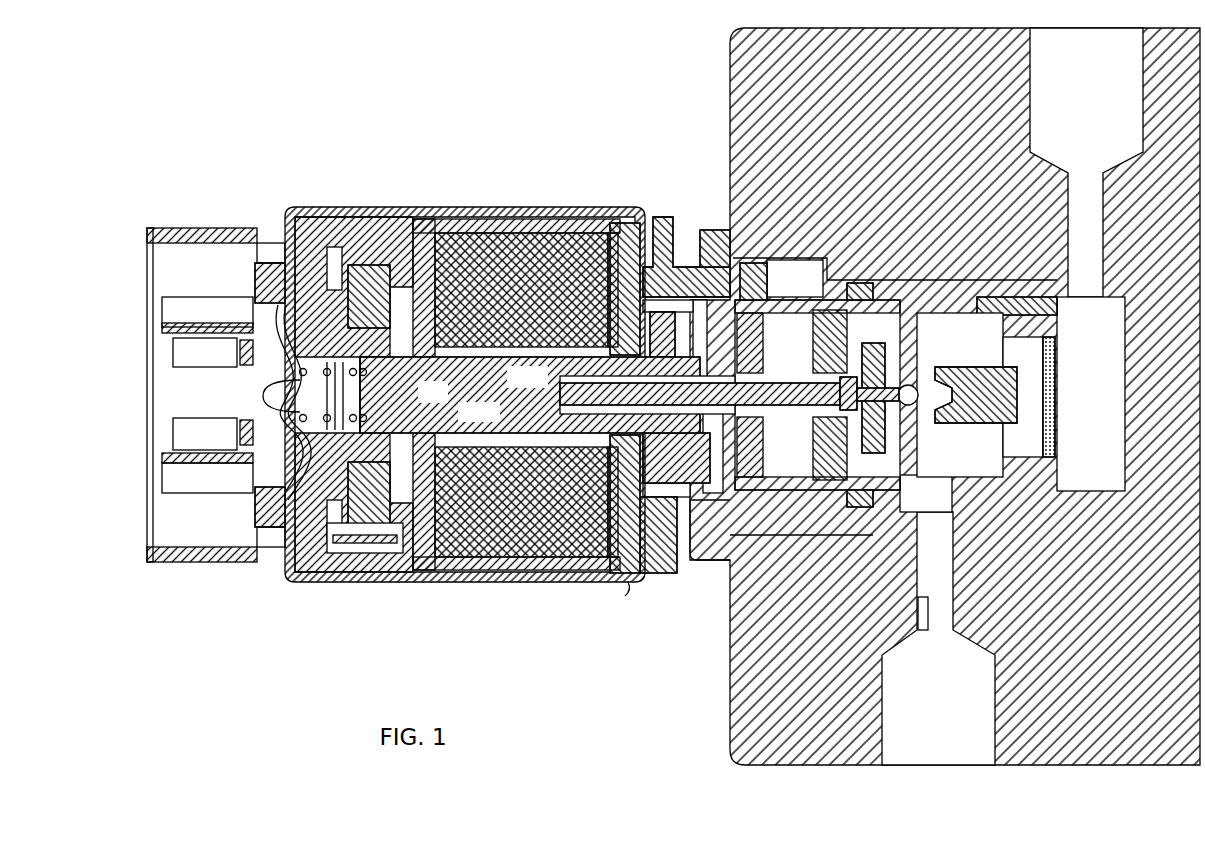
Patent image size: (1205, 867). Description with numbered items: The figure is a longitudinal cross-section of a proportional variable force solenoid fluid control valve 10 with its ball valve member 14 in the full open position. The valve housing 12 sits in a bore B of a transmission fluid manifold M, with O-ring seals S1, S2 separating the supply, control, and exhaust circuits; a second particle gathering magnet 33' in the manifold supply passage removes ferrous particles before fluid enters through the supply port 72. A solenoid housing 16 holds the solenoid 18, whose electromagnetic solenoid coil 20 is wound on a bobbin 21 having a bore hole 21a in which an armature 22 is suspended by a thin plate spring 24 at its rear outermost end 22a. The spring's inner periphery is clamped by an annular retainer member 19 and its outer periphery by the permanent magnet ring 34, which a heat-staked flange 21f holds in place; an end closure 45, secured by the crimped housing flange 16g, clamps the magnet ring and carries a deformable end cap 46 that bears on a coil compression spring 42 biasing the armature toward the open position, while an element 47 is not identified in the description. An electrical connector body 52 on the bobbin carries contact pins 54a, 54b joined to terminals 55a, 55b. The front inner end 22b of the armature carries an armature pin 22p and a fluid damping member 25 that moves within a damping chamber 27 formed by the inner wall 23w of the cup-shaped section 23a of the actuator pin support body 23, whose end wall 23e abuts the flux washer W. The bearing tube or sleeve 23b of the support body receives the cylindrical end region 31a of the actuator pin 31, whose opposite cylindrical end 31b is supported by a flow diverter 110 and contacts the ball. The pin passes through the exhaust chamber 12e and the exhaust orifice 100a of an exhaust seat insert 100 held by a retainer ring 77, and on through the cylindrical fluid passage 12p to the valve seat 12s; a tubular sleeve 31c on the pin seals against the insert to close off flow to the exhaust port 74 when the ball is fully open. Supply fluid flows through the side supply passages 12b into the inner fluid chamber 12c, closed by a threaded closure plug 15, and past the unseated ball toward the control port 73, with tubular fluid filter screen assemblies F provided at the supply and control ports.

The proportional variable force solenoid fluid control valve 10 is at (493, 105).
The valve housing 12 is at (727, 525).
The side supply passages 12b is at (985, 478).
The inner fluid chamber 12c is at (1000, 432).
The exhaust chamber 12e is at (842, 335).
The cylindrical fluid passage 12p is at (913, 290).
The valve seat 12s is at (890, 470).
The ball valve member 14 is at (938, 638).
The threaded closure plug 15 is at (1014, 397).
The solenoid housing 16 is at (388, 600).
The housing flange 16g is at (283, 568).
The solenoid 18 is at (488, 228).
The annular retainer member 19 is at (305, 245).
The electromagnetic solenoid coil 20 is at (528, 245).
The bobbin 21 is at (405, 245).
The bore hole 21a is at (565, 368).
The heat-staked flange 21f is at (332, 250).
The armature 22 is at (518, 547).
The rear outermost end of armature 22a is at (310, 578).
The front inner end of armature 22b is at (553, 245).
The armature pin 22p is at (565, 392).
The actuator pin support body 23 is at (695, 300).
The tubular cup-shaped section 23a is at (690, 530).
The bearing tube or sleeve 23b is at (767, 340).
The end wall 23e is at (556, 560).
The inner wall 23w is at (668, 318).
The plate spring 24 is at (530, 395).
The fluid damping member 25 is at (578, 250).
The fluid damping chamber 27 is at (665, 562).
The actuator pin 31 is at (790, 350).
The cylindrical end region of actuator pin 31a is at (740, 320).
The opposite cylindrical end of actuator pin 31b is at (930, 302).
The tubular sleeve 31c is at (722, 585).
The second particle gathering magnet 33' is at (913, 648).
The permanent magnet ring 34 is at (392, 262).
The coil compression spring 42 is at (243, 563).
The end closure 45 is at (292, 245).
The deformable end cap 46 is at (277, 348).
The contact bracket 47 is at (250, 293).
The electrical connector body 52 is at (200, 565).
The electrical terminal contact pin 54a is at (237, 420).
The electrical terminal contact pin 54b is at (250, 303).
The electrical terminal 55a is at (213, 362).
The electrical terminal 55b is at (203, 432).
The supply port 72 is at (915, 500).
The control port 73 is at (1035, 360).
The exhaust port 74 is at (870, 300).
The retainer ring 77 is at (855, 500).
The exhaust seat insert 100 is at (863, 300).
The exhaust orifice 100a is at (830, 535).
The flow diverter 110 is at (880, 330).
The bore B is at (1081, 330).
The tubular fluid filter screen assembly F is at (1072, 265).
The transmission fluid manifold M is at (728, 78).
The O-ring seal S1 is at (870, 485).
The O-ring seal S2 is at (1022, 487).
The flux washer W is at (628, 582).